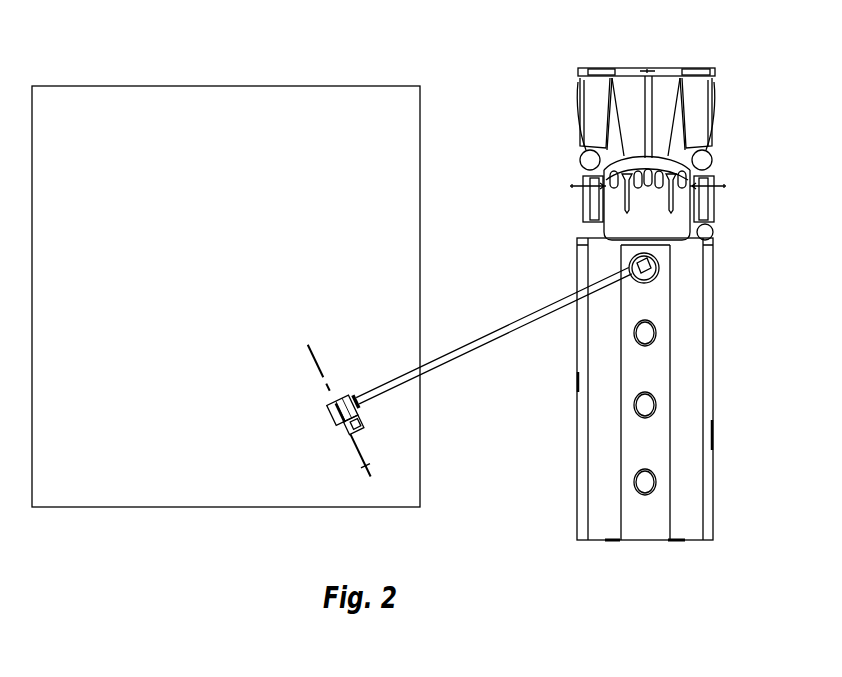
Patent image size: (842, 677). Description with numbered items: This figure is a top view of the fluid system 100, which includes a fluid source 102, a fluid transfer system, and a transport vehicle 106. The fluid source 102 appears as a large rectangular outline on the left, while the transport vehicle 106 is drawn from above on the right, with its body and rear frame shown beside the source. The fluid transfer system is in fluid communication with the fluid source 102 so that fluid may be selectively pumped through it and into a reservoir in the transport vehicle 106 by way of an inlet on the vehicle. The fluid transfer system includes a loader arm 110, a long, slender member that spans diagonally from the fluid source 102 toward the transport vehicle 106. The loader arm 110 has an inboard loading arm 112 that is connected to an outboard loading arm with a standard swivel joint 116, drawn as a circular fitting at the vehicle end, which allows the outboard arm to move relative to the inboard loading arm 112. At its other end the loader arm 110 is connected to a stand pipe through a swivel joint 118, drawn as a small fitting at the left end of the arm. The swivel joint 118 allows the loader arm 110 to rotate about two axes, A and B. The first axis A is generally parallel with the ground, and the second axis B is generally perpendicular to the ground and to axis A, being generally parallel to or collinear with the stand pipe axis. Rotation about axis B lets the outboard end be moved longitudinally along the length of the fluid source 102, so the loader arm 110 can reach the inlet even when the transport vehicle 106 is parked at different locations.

The fluid system 100 is at (713, 42).
The fluid source 102 is at (148, 86).
The transport vehicle 106 is at (720, 332).
The loader arm 110 is at (404, 400).
The inboard loading arm 112 is at (530, 315).
The swivel joint 116 is at (650, 263).
The swivel joint 118 is at (327, 413).
The axis A is at (369, 467).
The axis B is at (360, 423).